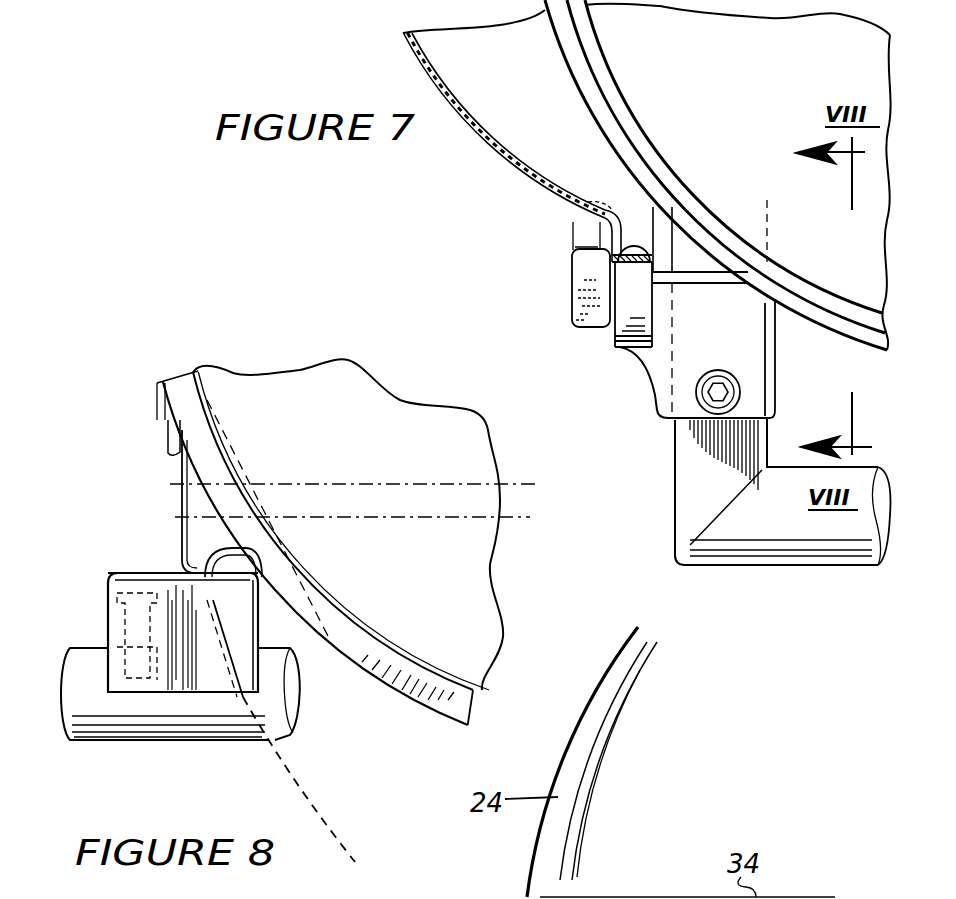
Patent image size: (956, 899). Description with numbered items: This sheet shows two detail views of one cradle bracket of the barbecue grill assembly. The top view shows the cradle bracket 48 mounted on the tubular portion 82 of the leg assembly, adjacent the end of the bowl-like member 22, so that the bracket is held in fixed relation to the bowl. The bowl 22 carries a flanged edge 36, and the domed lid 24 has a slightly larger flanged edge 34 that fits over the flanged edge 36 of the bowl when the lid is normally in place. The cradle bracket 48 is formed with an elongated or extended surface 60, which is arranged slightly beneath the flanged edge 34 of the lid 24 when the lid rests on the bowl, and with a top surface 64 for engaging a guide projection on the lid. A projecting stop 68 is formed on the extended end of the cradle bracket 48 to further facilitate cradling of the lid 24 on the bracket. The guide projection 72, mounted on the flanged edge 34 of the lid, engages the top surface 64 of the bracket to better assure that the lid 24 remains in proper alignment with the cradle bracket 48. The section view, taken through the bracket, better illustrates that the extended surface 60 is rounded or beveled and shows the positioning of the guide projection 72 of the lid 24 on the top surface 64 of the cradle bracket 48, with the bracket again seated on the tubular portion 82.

In FIG. 7, the bowl-like member 22 is at (640, 95).
In FIG. 8, the bowl-like member 22 is at (290, 768).
In FIG. 7, the lid 24 is at (490, 146).
In FIG. 8, the lid 24 is at (203, 392).
In FIG. 7, the flanged edge 34 is at (604, 232).
In FIG. 8, the flanged edge 34 is at (197, 428).
In FIG. 7, the flanged edge 36 is at (578, 60).
In FIG. 7, the cradle bracket 48 is at (624, 378).
In FIG. 8, the cradle bracket 48 is at (92, 594).
In FIG. 7, the extended surface 60 is at (683, 270).
In FIG. 7, the top surface 64 is at (740, 343).
In FIG. 8, the top surface 64 is at (155, 575).
In FIG. 7, the projecting stop 68 is at (580, 268).
In FIG. 8, the projecting stop 68 is at (233, 557).
In FIG. 7, the guide projection 72 is at (625, 325).
In FIG. 8, the guide projection 72 is at (185, 533).
In FIG. 7, the tubular portion 82 is at (700, 490).
In FIG. 8, the tubular portion 82 is at (108, 727).